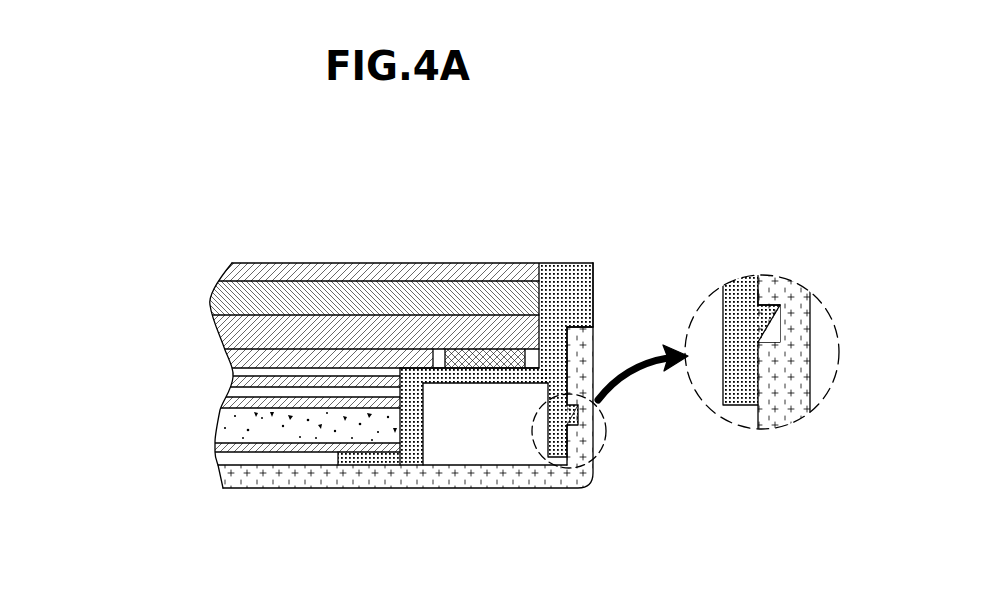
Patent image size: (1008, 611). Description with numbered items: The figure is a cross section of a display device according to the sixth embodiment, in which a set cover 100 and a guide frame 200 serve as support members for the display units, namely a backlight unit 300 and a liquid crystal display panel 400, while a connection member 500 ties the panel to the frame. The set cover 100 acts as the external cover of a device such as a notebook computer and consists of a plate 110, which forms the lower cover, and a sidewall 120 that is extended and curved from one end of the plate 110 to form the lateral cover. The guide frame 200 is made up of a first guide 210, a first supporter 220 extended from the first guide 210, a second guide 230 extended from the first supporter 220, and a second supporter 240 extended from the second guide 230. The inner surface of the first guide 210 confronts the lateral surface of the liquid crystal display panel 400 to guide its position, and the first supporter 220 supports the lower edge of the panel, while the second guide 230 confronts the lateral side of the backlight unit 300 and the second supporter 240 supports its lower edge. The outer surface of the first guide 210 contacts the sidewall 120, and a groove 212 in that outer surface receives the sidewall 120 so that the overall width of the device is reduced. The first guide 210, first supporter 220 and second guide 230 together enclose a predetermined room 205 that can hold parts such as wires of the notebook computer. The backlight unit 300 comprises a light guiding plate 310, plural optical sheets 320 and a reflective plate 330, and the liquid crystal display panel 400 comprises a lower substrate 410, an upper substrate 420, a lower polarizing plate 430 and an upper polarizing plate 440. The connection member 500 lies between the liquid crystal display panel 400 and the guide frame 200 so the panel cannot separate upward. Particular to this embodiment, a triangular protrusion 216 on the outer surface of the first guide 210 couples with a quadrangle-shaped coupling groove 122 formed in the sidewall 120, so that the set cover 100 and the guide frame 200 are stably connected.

The set cover 100 is at (546, 360).
The plate 110 is at (533, 483).
The sidewall 120 is at (585, 433).
The coupling groove 122 is at (770, 322).
The guide frame 200 is at (559, 397).
The predetermined room 205 is at (442, 397).
The first guide 210 is at (552, 310).
The groove 212 is at (583, 326).
The protrusion 216 is at (763, 305).
The first supporter 220 is at (472, 377).
The second guide 230 is at (425, 405).
The second supporter 240 is at (373, 458).
The backlight unit 300 is at (227, 415).
The light guiding plate 310 is at (222, 422).
The optical sheets 320 is at (223, 403).
The reflective plate 330 is at (223, 450).
The liquid crystal display panel 400 is at (297, 298).
The lower substrate 410 is at (223, 334).
The upper substrate 420 is at (222, 305).
The lower polarizing plate 430 is at (233, 365).
The upper polarizing plate 440 is at (217, 278).
The connection member 500 is at (485, 357).